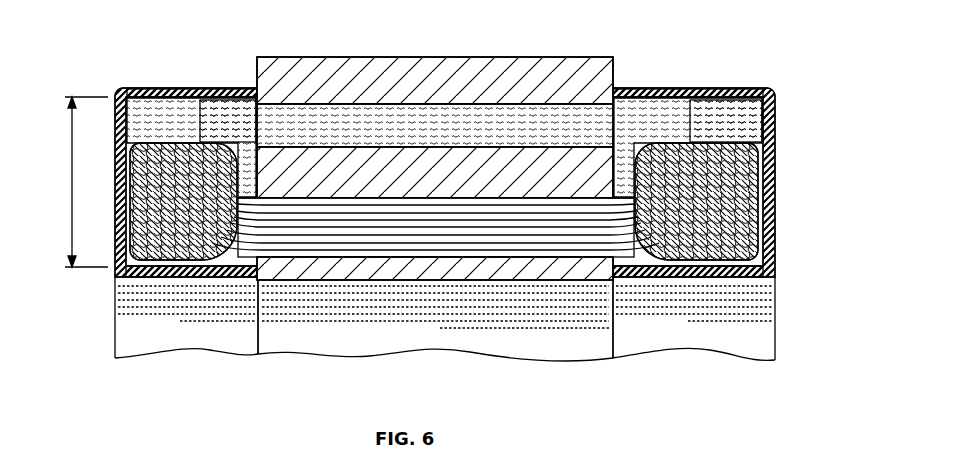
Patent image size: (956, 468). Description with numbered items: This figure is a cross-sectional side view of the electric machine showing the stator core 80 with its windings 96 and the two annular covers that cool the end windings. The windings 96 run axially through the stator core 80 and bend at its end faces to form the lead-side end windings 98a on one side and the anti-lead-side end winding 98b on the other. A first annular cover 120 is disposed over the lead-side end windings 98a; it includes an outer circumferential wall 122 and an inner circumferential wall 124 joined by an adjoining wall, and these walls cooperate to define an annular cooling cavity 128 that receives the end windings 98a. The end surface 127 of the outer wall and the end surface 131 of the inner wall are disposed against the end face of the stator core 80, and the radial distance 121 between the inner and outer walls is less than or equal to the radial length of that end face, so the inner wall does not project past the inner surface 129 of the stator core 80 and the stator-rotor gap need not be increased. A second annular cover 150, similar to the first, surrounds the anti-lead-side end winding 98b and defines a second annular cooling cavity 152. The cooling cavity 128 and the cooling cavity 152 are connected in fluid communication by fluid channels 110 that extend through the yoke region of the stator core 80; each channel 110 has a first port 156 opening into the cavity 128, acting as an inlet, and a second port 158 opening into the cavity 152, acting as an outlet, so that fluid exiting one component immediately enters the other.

The first annular cover 120 is at (116, 86).
The radial distance 121 is at (71, 190).
The outer circumferential wall 122 is at (221, 88).
The inner circumferential wall 124 is at (192, 277).
The end surface of outer wall 127 is at (268, 90).
The annular cooling cavity 128 is at (172, 122).
The inner surface of the stator core 129 is at (428, 281).
The end surface of inner wall 131 is at (262, 279).
The first port 156 is at (228, 116).
The second port 158 is at (633, 95).
The second annular cover 150 is at (688, 89).
The annular cooling cavity 152 is at (735, 115).
The fluid channels 110 is at (500, 113).
The stator core 80 is at (538, 82).
The windings 96 is at (468, 232).
The lead-side end windings 98a is at (128, 303).
The anti-lead-side end winding 98b is at (742, 260).